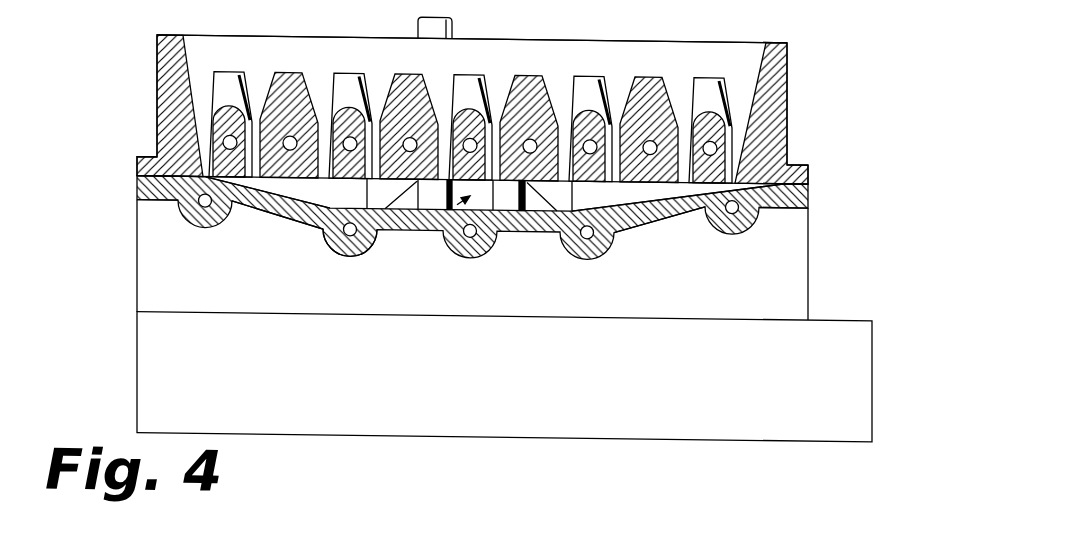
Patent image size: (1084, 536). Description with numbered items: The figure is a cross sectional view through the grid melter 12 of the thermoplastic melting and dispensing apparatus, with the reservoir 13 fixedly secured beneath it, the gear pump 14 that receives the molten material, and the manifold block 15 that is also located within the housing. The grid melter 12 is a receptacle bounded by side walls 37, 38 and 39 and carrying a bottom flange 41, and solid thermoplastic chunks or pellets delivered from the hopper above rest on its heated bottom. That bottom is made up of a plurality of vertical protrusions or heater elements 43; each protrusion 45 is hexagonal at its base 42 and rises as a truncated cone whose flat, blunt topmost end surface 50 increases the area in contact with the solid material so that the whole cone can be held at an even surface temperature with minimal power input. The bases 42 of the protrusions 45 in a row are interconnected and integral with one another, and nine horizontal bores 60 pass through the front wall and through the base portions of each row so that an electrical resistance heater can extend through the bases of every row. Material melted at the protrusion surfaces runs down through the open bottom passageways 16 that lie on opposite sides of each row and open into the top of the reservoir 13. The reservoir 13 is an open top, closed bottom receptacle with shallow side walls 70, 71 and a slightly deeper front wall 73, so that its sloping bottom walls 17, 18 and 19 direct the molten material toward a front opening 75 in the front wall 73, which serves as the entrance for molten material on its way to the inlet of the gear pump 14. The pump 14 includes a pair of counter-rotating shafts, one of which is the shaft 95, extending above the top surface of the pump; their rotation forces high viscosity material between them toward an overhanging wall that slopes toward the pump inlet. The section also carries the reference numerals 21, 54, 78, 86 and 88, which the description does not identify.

The grid melter 12 is at (142, 128).
The reservoir 13 is at (131, 230).
The gear pump 14 is at (426, 237).
The manifold block 15 is at (500, 420).
The bottom passageways 16 is at (323, 135).
The sloping bottom wall 17 is at (283, 225).
The sloping bottom wall 18 is at (512, 237).
The sloping bottom wall 19 is at (690, 209).
The upper member 21 is at (512, 14).
The side wall 37 is at (788, 104).
The side wall 38 is at (510, 57).
The side wall 39 is at (168, 95).
The bottom flange 41 is at (137, 171).
The base 42 is at (252, 216).
The heater elements 43 is at (314, 74).
The protrusion 45 is at (263, 80).
The topmost end surface 50 is at (465, 78).
The stud 54 is at (432, 25).
The horizontal bore 60 is at (482, 102).
The side wall 70 is at (790, 193).
The side wall 71 is at (150, 194).
The front wall 73 is at (338, 215).
The front opening 75 is at (367, 241).
The gap 78 is at (470, 304).
The pivot lobe 86 is at (202, 216).
The direction arrow 88 is at (447, 257).
The counter-rotating shaft 95 is at (505, 198).